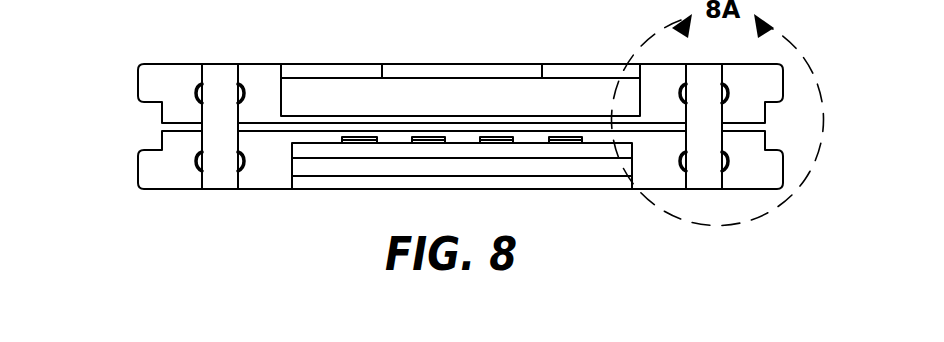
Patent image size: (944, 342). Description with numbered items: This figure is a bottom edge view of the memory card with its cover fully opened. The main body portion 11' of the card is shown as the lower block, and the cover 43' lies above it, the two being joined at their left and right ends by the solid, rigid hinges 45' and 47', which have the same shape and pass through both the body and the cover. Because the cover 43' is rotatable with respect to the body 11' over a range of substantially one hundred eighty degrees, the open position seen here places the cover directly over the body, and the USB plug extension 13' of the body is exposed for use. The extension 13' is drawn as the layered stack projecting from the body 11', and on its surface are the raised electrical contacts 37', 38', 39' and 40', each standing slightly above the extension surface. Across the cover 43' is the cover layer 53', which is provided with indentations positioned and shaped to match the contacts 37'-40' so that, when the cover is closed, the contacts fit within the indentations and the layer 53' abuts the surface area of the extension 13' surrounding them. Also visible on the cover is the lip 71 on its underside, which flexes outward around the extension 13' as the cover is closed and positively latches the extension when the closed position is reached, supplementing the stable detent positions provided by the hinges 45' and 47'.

The cover 43' is at (415, 83).
The main body portion 11' is at (415, 160).
The hinge 45' is at (186, 149).
The hinge 47' is at (740, 157).
The cover layer 53' is at (460, 65).
The lip 71 is at (478, 64).
The USB plug extension 13' is at (427, 209).
The electrical contact 37' is at (321, 178).
The electrical contact 38' is at (391, 178).
The electrical contact 39' is at (461, 178).
The electrical contact 40' is at (532, 178).